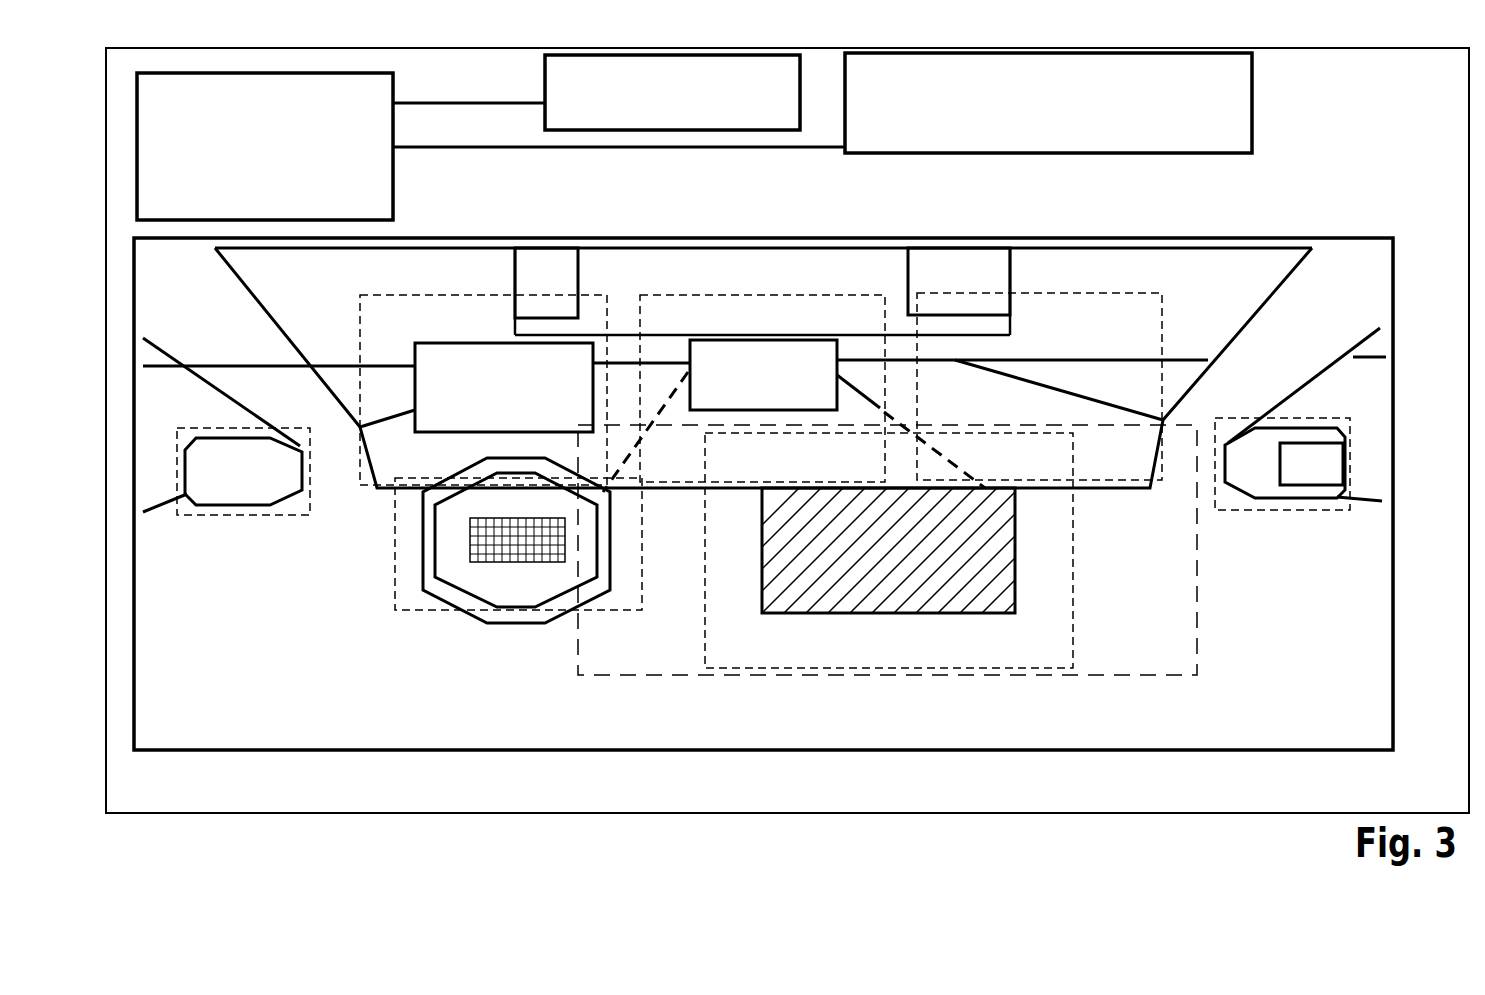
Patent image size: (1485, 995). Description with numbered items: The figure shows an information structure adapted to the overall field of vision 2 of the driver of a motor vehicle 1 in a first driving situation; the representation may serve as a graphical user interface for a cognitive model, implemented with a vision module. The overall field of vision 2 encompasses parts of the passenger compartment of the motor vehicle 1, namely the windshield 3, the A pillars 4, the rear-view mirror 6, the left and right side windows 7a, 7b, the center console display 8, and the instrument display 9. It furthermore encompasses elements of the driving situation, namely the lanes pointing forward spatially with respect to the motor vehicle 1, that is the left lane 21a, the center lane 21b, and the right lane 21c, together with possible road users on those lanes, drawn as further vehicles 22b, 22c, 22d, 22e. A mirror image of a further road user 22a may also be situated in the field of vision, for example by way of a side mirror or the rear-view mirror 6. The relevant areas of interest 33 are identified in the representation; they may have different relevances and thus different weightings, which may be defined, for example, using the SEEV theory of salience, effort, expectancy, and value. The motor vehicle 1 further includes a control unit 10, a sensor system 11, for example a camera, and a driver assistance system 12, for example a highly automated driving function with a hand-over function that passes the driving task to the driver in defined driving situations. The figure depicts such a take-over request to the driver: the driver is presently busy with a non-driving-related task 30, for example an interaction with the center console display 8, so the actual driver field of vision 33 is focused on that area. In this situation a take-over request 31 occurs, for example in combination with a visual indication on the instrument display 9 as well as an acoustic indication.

The motor vehicle 1 is at (780, 814).
The overall field of vision 2 is at (1200, 246).
The windshield 3 is at (1252, 247).
The A pillars 4 is at (1340, 298).
The rear-view mirror 6 is at (797, 252).
The left side window 7a is at (182, 440).
The right side window 7b is at (1345, 428).
The center console display 8 is at (748, 630).
The instrument display 9 is at (490, 585).
The control unit 10 is at (248, 180).
The sensor system 11 is at (690, 125).
The driver assistance system 12 is at (1031, 135).
The left lane 21a is at (665, 362).
The center lane 21b is at (858, 382).
The right lane 21c is at (900, 360).
The mirror image of further road user 22a is at (1325, 465).
The sensor unit 22b is at (462, 358).
The sensor unit 22c is at (746, 354).
The sensor unit 22d is at (546, 264).
The sensor unit 22e is at (958, 264).
The non-driving-related task 30 is at (888, 594).
The take-over request 31 is at (518, 555).
The areas of interest 33 is at (1197, 633).